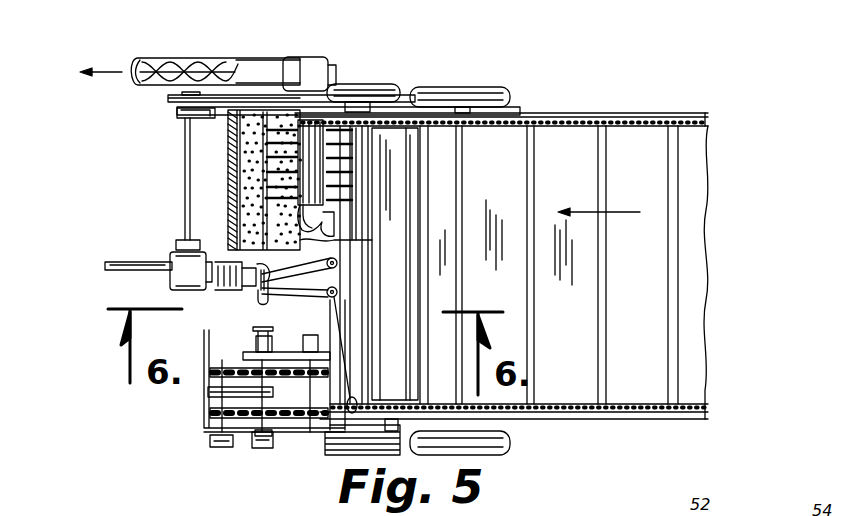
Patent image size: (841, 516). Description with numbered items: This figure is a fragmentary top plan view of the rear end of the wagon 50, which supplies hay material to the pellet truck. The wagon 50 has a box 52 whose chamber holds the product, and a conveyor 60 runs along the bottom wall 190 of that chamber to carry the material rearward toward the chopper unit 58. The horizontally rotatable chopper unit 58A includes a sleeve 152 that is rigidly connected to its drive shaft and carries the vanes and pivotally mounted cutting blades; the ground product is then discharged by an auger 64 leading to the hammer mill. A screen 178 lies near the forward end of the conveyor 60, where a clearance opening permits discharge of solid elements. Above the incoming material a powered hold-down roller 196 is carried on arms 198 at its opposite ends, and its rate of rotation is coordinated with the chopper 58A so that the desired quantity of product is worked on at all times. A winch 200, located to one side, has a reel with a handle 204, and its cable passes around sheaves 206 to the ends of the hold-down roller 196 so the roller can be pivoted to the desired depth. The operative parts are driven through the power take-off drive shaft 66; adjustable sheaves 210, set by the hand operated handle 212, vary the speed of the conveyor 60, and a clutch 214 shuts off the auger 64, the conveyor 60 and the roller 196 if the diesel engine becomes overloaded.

The wagon 50 is at (603, 73).
The box 52 is at (655, 114).
The chopper unit 58 is at (181, 181).
The horizontally rotatable chopper unit 58A is at (272, 158).
The conveyor 60 is at (713, 256).
The auger 64 is at (259, 58).
The drive shaft 66 is at (124, 262).
The sleeve 152 is at (313, 140).
The screen 178 is at (245, 195).
The bottom wall 190 is at (655, 186).
The hold-down roller 196 is at (414, 254).
The arms 198 is at (397, 118).
The winch 200 is at (224, 295).
The handle 204 is at (264, 301).
The sheaves 206 is at (324, 266).
The adjustable sheaves 210 is at (256, 352).
The hand operated handle 212 is at (262, 324).
The clutch 214 is at (272, 440).